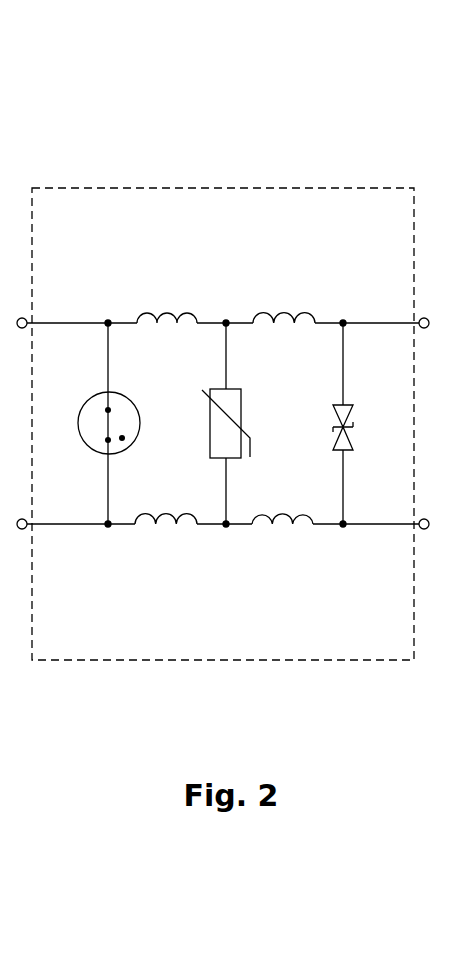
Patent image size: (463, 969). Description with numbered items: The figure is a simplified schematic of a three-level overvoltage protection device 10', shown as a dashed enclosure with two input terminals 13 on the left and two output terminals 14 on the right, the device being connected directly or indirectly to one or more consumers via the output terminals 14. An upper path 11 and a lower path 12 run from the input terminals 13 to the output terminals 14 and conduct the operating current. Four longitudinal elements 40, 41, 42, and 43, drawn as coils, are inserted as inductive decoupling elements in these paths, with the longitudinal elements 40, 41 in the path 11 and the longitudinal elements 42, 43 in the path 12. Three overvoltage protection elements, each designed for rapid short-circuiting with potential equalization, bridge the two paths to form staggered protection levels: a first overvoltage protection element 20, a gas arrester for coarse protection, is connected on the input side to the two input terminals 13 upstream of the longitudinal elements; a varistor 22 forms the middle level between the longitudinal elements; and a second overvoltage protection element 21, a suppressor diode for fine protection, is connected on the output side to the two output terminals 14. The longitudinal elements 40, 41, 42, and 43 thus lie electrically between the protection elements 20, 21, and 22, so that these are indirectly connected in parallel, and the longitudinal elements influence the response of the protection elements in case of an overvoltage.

The three-level overvoltage protection device 10' is at (223, 347).
The path 11 is at (332, 319).
The path 12 is at (128, 527).
The input terminals 13 is at (22, 328).
The output terminals 14 is at (424, 328).
The overvoltage protection element 20 is at (87, 424).
The overvoltage protection element 21 is at (349, 427).
The varistor 22 is at (225, 402).
The longitudinal element 40 is at (168, 316).
The longitudinal element 41 is at (272, 313).
The longitudinal element 42 is at (158, 530).
The longitudinal element 43 is at (270, 528).